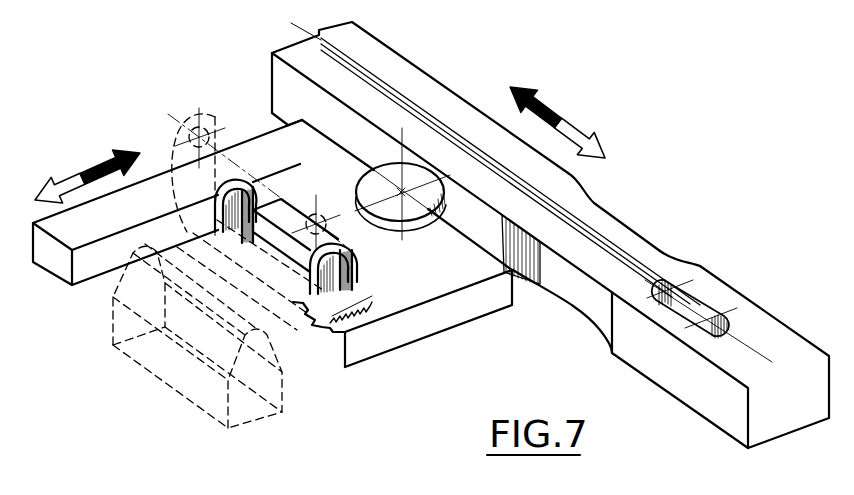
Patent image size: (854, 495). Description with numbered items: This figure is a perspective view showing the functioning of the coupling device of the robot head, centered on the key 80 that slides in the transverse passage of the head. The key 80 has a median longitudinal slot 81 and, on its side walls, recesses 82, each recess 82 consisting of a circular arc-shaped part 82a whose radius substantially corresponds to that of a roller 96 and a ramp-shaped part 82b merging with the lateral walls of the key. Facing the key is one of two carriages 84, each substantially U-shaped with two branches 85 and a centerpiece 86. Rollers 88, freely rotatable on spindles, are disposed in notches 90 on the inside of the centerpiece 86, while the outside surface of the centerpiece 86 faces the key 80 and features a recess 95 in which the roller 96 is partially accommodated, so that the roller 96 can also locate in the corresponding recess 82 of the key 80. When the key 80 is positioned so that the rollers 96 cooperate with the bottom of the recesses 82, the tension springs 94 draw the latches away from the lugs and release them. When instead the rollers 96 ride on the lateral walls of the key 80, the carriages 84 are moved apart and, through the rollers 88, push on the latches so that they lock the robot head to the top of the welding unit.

The key 80 is at (672, 267).
The median longitudinal slot 81 is at (432, 116).
The recesses 82 is at (647, 243).
The circular arc-shaped part 82a is at (603, 342).
The ramp-shaped part 82b is at (590, 197).
The carriage 84 is at (412, 298).
The branches 85 is at (126, 225).
The centerpiece 86 is at (440, 278).
The rollers 88 is at (248, 183).
The notches 90 is at (352, 248).
The tension springs 94 is at (363, 295).
The recess 95 is at (415, 224).
The roller 96 is at (393, 180).